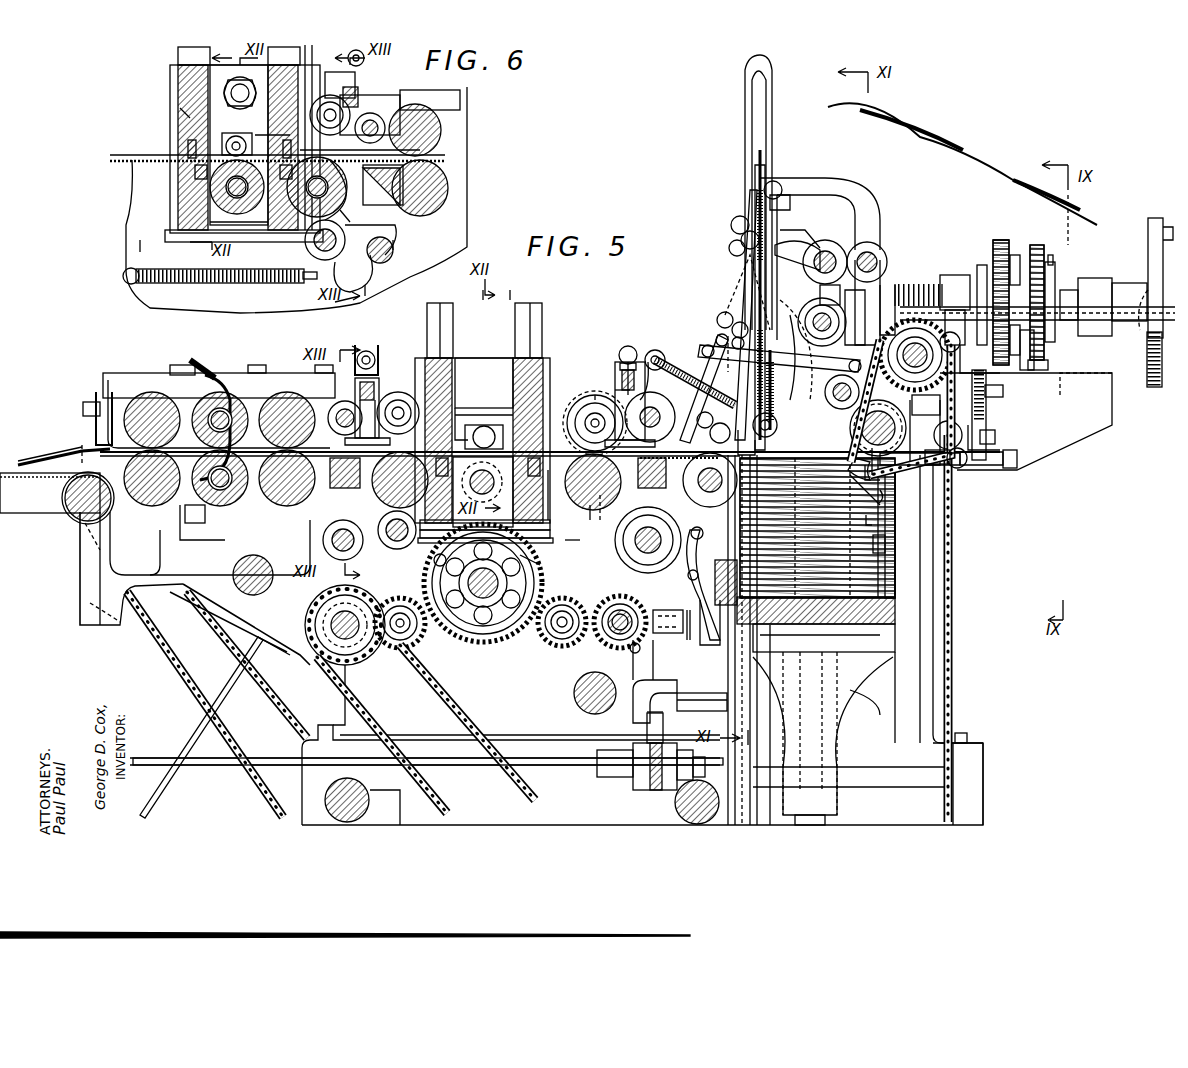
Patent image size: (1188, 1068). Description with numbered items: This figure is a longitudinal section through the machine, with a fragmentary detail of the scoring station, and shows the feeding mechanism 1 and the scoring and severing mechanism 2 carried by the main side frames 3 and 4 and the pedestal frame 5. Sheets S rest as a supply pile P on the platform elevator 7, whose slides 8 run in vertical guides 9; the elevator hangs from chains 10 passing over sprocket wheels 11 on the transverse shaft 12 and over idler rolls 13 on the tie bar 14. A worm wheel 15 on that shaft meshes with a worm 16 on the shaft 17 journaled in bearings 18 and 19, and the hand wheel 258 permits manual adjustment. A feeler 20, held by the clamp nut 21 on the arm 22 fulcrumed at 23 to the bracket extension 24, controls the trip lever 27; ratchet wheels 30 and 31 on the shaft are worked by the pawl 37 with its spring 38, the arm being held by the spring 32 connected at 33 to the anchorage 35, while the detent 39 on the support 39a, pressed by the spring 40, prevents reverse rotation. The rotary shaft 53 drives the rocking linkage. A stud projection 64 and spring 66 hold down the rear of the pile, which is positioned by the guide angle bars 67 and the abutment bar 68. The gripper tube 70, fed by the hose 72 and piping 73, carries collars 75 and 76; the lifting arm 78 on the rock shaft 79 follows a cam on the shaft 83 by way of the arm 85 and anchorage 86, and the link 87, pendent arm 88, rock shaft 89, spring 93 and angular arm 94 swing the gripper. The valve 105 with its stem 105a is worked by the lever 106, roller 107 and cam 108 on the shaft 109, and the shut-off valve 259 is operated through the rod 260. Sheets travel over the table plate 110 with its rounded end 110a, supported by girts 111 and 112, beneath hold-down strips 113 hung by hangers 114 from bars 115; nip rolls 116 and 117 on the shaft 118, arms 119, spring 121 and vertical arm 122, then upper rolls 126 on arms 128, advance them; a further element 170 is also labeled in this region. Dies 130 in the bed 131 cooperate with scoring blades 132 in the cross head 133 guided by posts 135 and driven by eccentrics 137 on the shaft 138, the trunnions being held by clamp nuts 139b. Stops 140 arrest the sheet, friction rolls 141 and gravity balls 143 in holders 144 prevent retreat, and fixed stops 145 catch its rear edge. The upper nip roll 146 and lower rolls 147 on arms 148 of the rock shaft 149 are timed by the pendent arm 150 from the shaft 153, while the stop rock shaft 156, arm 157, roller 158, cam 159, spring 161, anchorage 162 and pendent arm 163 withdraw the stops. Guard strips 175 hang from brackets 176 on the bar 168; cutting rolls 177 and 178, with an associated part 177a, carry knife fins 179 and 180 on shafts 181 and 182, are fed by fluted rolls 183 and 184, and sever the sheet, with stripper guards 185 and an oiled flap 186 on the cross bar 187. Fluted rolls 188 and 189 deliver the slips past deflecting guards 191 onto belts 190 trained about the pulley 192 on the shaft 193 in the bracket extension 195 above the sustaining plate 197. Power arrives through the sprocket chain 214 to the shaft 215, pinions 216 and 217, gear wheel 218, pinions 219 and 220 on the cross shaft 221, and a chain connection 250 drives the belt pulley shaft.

In FIG. 5, the feeding mechanism 1 is at (960, 152).
In FIG. 5, the scoring and severing mechanism 2 is at (215, 745).
In FIG. 5, the main side frame 3 is at (160, 585).
In FIG. 6, the main side frame 4 is at (140, 246).
In FIG. 5, the supplemental side frame 5 is at (985, 805).
In FIG. 5, the platform elevator 7 is at (890, 598).
In FIG. 5, the slides 8 is at (875, 680).
In FIG. 5, the vertical guides 9 is at (835, 820).
In FIG. 5, the chains 10 is at (952, 538).
In FIG. 5, the sprocket wheels 11 is at (926, 407).
In FIG. 5, the transverse shaft 12 is at (945, 330).
In FIG. 5, the grooved idler rolls 13 is at (925, 432).
In FIG. 5, the fixed tie bar 14 is at (865, 428).
In FIG. 5, the worm wheel 15 is at (895, 285).
In FIG. 5, the worm 16 is at (925, 275).
In FIG. 5, the shaft 17 is at (1050, 320).
In FIG. 5, the bearing 18 is at (1103, 285).
In FIG. 5, the bearing 19 is at (960, 275).
In FIG. 5, the feeler finger 20 is at (875, 480).
In FIG. 5, the winged clamp nut 21 is at (960, 478).
In FIG. 5, the horizontal arm 22 is at (980, 470).
In FIG. 5, the fulcrum 23 is at (1010, 460).
In FIG. 5, the rearward bracket extension 24 is at (1085, 432).
In FIG. 5, the vertical trip lever 27 is at (1000, 413).
In FIG. 5, the ratchet wheel 30 is at (1010, 370).
In FIG. 5, the ratchet wheel 31 is at (1040, 350).
In FIG. 5, the helical tension spring 32 is at (1005, 395).
In FIG. 5, the spring connection 33 is at (985, 270).
In FIG. 5, the fixed anchorage 35 is at (998, 437).
In FIG. 5, the pawl 37 is at (998, 240).
In FIG. 5, the spring 38 is at (1016, 260).
In FIG. 5, the detent 39 is at (1040, 245).
In FIG. 5, the upstanding bearing support 39a is at (1040, 365).
In FIG. 5, the spring 40 is at (1055, 270).
In FIG. 5, the transverse rotary shaft 53 is at (800, 390).
In FIG. 5, the tapered stud projection 64 is at (890, 510).
In FIG. 5, the tension spring 66 is at (885, 548).
In FIG. 5, the vertical guide angle bars 67 is at (745, 690).
In FIG. 5, the central vertical abutment bar 68 is at (735, 672).
In FIG. 5, the tube 70 is at (740, 258).
In FIG. 5, the flexible hose 72 is at (745, 115).
In FIG. 5, the piping 73 is at (660, 695).
In FIG. 5, the collar 75 is at (740, 225).
In FIG. 5, the collar 76 is at (740, 295).
In FIG. 5, the clevised lifting arm 78 is at (815, 245).
In FIG. 5, the transverse rock shaft 79 is at (827, 250).
In FIG. 5, the rotary shaft 83 is at (825, 310).
In FIG. 5, the third arm 85 is at (795, 235).
In FIG. 5, the fixed anchorage 86 is at (778, 405).
In FIG. 5, the link 87 is at (779, 382).
In FIG. 5, the pendent arm 88 is at (855, 320).
In FIG. 5, the rock shaft 89 is at (872, 250).
In FIG. 5, the helical spring 93 is at (778, 190).
In FIG. 5, the angular arm 94 is at (830, 178).
In FIG. 5, the valve 105 is at (728, 655).
In FIG. 5, the valve stem 105a is at (667, 632).
In FIG. 5, the lever 106 is at (690, 582).
In FIG. 5, the roller 107 is at (710, 520).
In FIG. 5, the cam 108 is at (620, 545).
In FIG. 5, the rotary shaft 109 is at (590, 515).
In FIG. 5, the table plate 110 is at (585, 490).
In FIG. 5, the rounded end 110a is at (745, 450).
In FIG. 5, the girt 111 is at (680, 452).
In FIG. 6, the girt 112 is at (410, 172).
In FIG. 5, the girt 112 is at (350, 485).
In FIG. 5, the hold-down strips 113 is at (590, 405).
In FIG. 5, the hangers 114 is at (615, 370).
In FIG. 5, the transverse supporting bars 115 is at (620, 365).
In FIG. 5, the upper nip rolls 116 is at (670, 370).
In FIG. 5, the lower nip rolls 117 is at (705, 515).
In FIG. 5, the transverse rotary shaft 118 is at (628, 486).
In FIG. 5, the horizontal arms 119 is at (660, 346).
In FIG. 5, the spring 121 is at (715, 360).
In FIG. 5, the vertical arm 122 is at (627, 345).
In FIG. 5, the upper rolls 126 is at (595, 395).
In FIG. 5, the arms 128 is at (595, 365).
In FIG. 6, the fixed die members 130 is at (200, 178).
In FIG. 5, the fixed die members 130 is at (432, 550).
In FIG. 6, the bed 131 is at (220, 222).
In FIG. 5, the bed 131 is at (548, 548).
In FIG. 6, the scoring blades 132 is at (272, 135).
In FIG. 5, the scoring blades 132 is at (455, 375).
In FIG. 6, the cross head 133 is at (185, 75).
In FIG. 5, the cross head 133 is at (478, 358).
In FIG. 6, the guide posts 135 is at (178, 55).
In FIG. 5, the guide posts 135 is at (518, 318).
In FIG. 6, the eccentrics 137 is at (230, 146).
In FIG. 5, the rotary shaft 138 is at (483, 640).
In FIG. 6, the clamp nuts 139b is at (234, 82).
In FIG. 6, the stops 140 is at (357, 190).
In FIG. 5, the stops 140 is at (375, 500).
In FIG. 6, the friction rolls 141 is at (210, 205).
In FIG. 6, the gravity balls 143 is at (182, 125).
In FIG. 5, the gravity balls 143 is at (456, 392).
In FIG. 6, the holder devices 144 is at (180, 108).
In FIG. 5, the holder devices 144 is at (476, 425).
In FIG. 6, the fixed stops 145 is at (175, 147).
In FIG. 5, the fixed stops 145 is at (543, 462).
In FIG. 6, the upper nip roll 146 is at (365, 100).
In FIG. 5, the upper nip roll 146 is at (398, 392).
In FIG. 6, the lower nip rolls 147 is at (210, 190).
In FIG. 5, the lower nip rolls 147 is at (397, 545).
In FIG. 6, the horizontal arms 148 is at (385, 118).
In FIG. 5, the horizontal arms 148 is at (400, 395).
In FIG. 6, the rock shaft 149 is at (460, 98).
In FIG. 5, the rock shaft 149 is at (335, 405).
In FIG. 6, the pendent arm 150 is at (300, 238).
In FIG. 6, the transverse shaft 153 is at (395, 245).
In FIG. 5, the transverse shaft 153 is at (330, 543).
In FIG. 6, the rock shaft 156 is at (315, 247).
In FIG. 5, the rock shaft 156 is at (440, 572).
In FIG. 6, the arm 157 is at (378, 250).
In FIG. 6, the roller 158 is at (395, 225).
In FIG. 6, the cam 159 is at (395, 257).
In FIG. 6, the spring 161 is at (185, 288).
In FIG. 6, the fixed anchorage 162 is at (128, 279).
In FIG. 6, the pendent arm 163 is at (300, 284).
In FIG. 6, the bar 168 is at (375, 92).
In FIG. 5, the bar 168 is at (340, 365).
In FIG. 5, the roller 170 is at (693, 415).
In FIG. 6, the additional guard strips 175 is at (440, 140).
In FIG. 5, the additional guard strips 175 is at (300, 385).
In FIG. 6, the suspension brackets 176 is at (380, 75).
In FIG. 5, the suspension brackets 176 is at (365, 350).
In FIG. 5, the upper cutting rolls 177 is at (165, 400).
In FIG. 5, the pin 177a is at (590, 520).
In FIG. 5, the lower cutting rolls 178 is at (235, 525).
In FIG. 5, the knife fins 179 is at (205, 400).
In FIG. 5, the knife fins 180 is at (245, 505).
In FIG. 5, the transverse rotary shaft 181 is at (268, 400).
In FIG. 5, the transverse rotary shaft 182 is at (222, 520).
In FIG. 6, the fluted auxiliary nip roll 183 is at (440, 120).
In FIG. 5, the fluted auxiliary nip roll 183 is at (280, 373).
In FIG. 6, the fluted auxiliary nip roll 184 is at (450, 192).
In FIG. 5, the fluted auxiliary nip roll 184 is at (290, 508).
In FIG. 5, the curved stripper guards 185 is at (190, 535).
In FIG. 5, the oil saturated flap 186 is at (218, 373).
In FIG. 5, the fixed cross bar 187 is at (195, 365).
In FIG. 5, the fluted nip roll 188 is at (110, 380).
In FIG. 5, the fluted nip roll 189 is at (145, 505).
In FIG. 5, the horizontal belts 190 is at (15, 465).
In FIG. 5, the deflecting guards 191 is at (100, 435).
In FIG. 5, the end pulley 192 is at (158, 552).
In FIG. 5, the shaft 193 is at (62, 468).
In FIG. 5, the forward bracket extension 195 is at (215, 745).
In FIG. 5, the sustaining plate 197 is at (57, 498).
In FIG. 5, the sprocket chain 214 is at (455, 712).
In FIG. 5, the shaft 215 is at (325, 612).
In FIG. 5, the spur pinion 216 is at (365, 660).
In FIG. 5, the spur pinion 217 is at (400, 648).
In FIG. 5, the gear wheel 218 is at (512, 645).
In FIG. 5, the pinion 219 is at (565, 650).
In FIG. 5, the pinion 220 is at (615, 600).
In FIG. 5, the cross shaft 221 is at (615, 645).
In FIG. 5, the sprocket chain connection 250 is at (265, 700).
In FIG. 5, the hand wheel 258 is at (1148, 395).
In FIG. 5, the auxiliary suction shut-off valve 259 is at (625, 778).
In FIG. 5, the rod 260 is at (215, 765).
In FIG. 5, the supply pile P is at (875, 520).
In FIG. 5, the sheet S is at (878, 500).